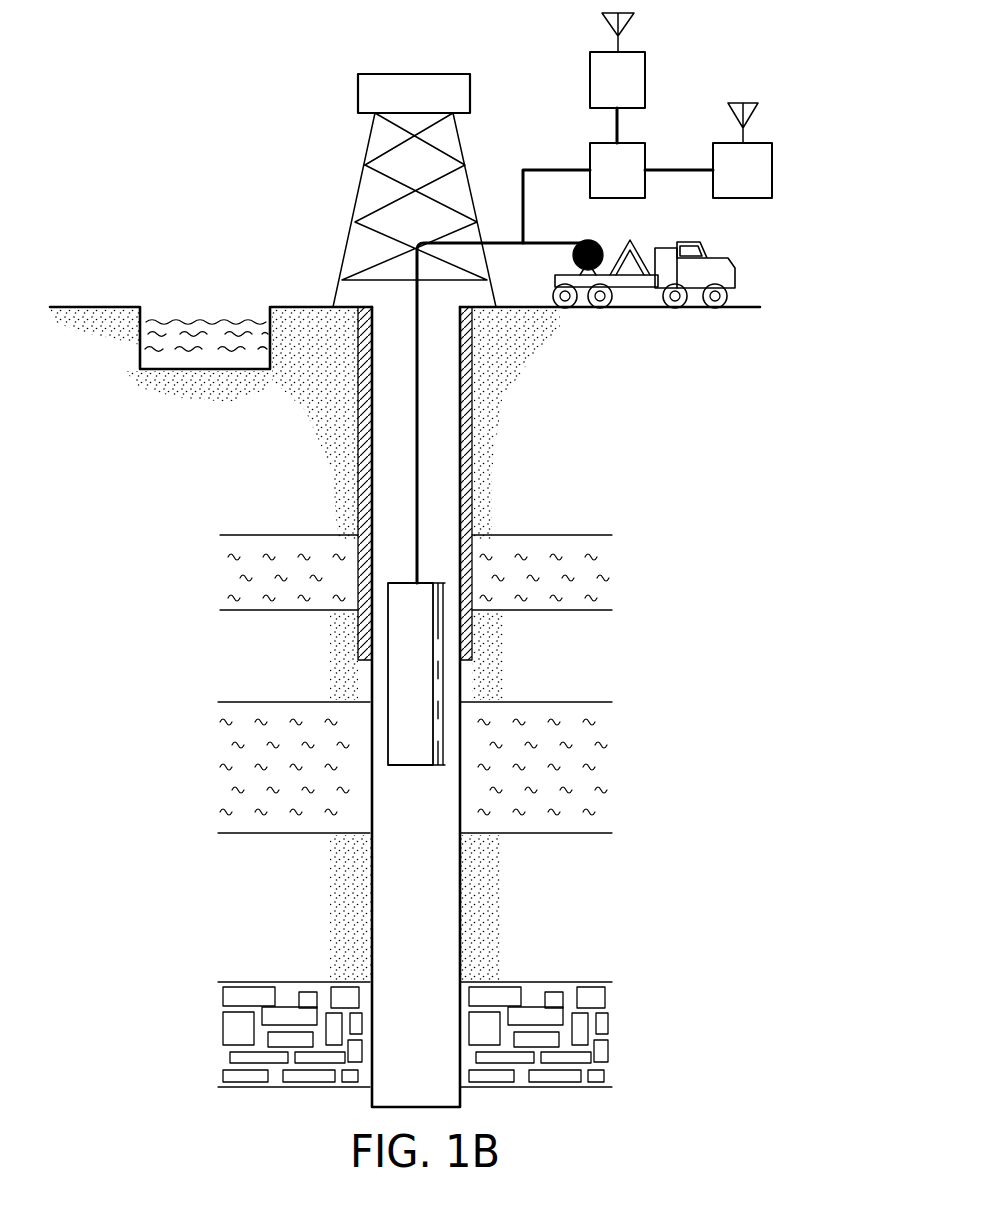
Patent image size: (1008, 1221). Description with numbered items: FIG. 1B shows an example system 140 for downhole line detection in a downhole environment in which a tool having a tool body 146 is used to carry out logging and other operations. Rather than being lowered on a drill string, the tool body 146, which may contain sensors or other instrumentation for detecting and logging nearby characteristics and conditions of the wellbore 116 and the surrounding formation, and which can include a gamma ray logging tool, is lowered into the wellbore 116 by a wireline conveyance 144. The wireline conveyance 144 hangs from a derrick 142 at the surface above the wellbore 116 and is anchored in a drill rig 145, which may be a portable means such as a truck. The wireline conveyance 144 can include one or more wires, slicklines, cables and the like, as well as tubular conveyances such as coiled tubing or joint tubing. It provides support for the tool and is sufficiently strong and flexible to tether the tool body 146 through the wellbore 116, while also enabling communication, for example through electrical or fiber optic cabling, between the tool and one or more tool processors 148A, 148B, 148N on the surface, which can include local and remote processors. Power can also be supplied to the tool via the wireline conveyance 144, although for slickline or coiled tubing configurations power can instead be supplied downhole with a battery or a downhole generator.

The system for downhole line detection 140 is at (272, 118).
The derrick / rig 142 is at (480, 122).
The wireline conveyance 144 is at (417, 249).
The drill rig 145 is at (566, 258).
The tool body 146 is at (400, 663).
The tool processor 148A is at (590, 55).
The tool processor 148B is at (645, 143).
The tool processor 148N is at (742, 198).
The wellbore 116 is at (455, 903).